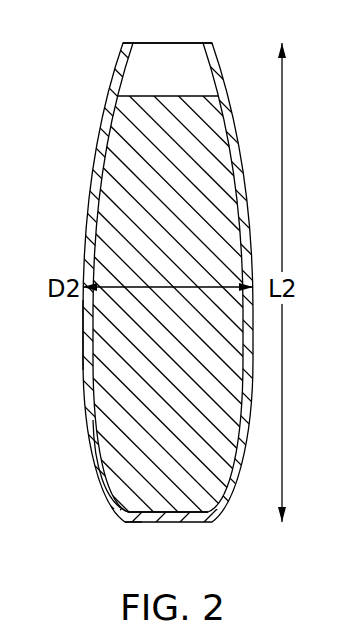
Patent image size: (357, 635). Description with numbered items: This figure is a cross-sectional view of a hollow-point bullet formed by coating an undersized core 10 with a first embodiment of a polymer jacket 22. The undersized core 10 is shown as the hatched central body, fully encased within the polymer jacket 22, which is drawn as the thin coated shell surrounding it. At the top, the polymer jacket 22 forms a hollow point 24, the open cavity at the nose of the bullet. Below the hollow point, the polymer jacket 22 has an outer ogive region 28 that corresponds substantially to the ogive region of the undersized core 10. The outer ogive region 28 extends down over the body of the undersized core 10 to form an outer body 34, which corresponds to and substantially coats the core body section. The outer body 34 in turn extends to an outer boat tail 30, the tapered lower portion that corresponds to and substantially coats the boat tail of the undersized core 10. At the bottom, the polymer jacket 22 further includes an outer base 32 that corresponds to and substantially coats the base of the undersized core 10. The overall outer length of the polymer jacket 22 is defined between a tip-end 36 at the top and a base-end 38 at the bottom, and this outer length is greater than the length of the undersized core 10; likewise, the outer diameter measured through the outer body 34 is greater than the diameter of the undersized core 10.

The undersized core 10 is at (110, 230).
The polymer jacket 22 is at (85, 112).
The hollow point 24 is at (186, 52).
The outer ogive region 28 is at (95, 157).
The outer boat tail 30 is at (100, 492).
The outer base 32 is at (178, 522).
The outer body 34 is at (50, 337).
The tip-end 36 is at (125, 45).
The base-end 38 is at (124, 521).